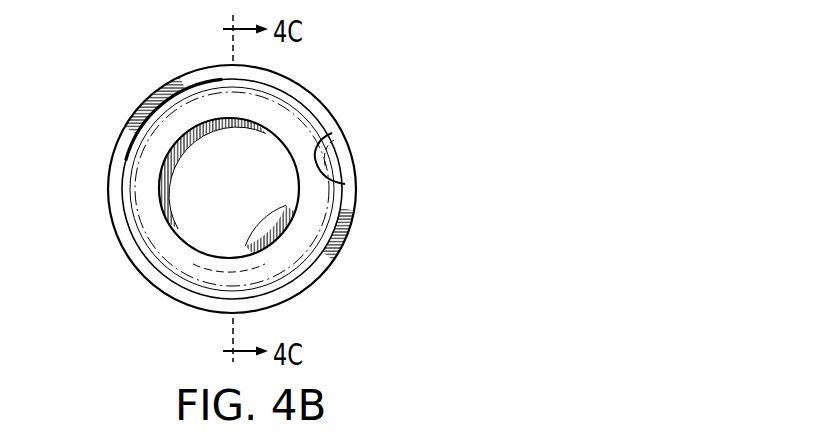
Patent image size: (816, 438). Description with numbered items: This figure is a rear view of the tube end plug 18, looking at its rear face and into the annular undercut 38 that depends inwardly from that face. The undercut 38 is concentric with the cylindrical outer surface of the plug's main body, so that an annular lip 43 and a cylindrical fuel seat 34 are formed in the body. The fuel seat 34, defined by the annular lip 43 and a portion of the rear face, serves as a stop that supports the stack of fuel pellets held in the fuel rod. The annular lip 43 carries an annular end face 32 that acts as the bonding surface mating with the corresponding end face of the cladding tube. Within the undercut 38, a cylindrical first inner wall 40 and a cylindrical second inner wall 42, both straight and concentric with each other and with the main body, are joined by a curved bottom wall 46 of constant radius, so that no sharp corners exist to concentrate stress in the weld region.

The tube end plug 18 is at (389, 107).
The annular end face 32 is at (302, 280).
The fuel seat 34 is at (325, 195).
The annular undercut 38 is at (154, 241).
The first inner wall 40 is at (288, 156).
The second inner wall 42 is at (345, 184).
The annular lip 43 is at (119, 158).
The bottom wall 46 is at (185, 278).